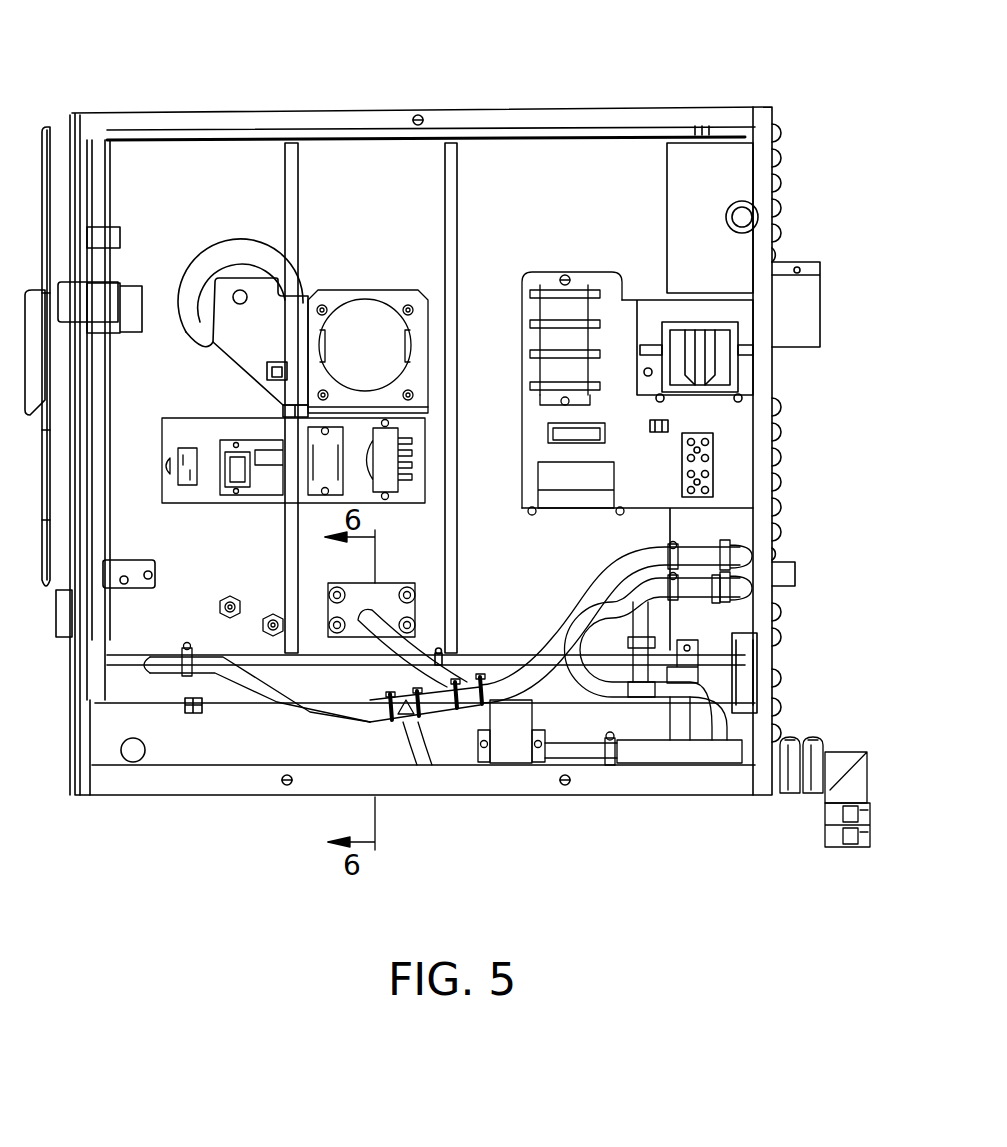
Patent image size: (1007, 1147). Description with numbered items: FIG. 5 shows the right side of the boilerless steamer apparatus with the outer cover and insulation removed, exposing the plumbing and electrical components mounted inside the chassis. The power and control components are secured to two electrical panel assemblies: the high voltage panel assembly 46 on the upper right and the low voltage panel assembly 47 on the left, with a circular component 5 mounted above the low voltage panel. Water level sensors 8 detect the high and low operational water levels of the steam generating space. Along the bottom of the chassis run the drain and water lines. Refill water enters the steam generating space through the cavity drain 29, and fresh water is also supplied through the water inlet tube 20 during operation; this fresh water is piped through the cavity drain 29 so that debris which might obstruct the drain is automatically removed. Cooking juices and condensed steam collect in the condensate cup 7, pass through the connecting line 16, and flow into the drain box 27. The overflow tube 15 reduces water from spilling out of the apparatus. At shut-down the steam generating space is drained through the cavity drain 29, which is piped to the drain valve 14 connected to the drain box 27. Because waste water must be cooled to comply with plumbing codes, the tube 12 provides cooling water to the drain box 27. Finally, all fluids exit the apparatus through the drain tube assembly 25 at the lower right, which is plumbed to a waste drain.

The circular component (fan/blower) 5 is at (363, 323).
The condensate cup 7 is at (353, 620).
The water level sensors 8 is at (262, 628).
The tube 12 is at (707, 592).
The drain valve 14 is at (512, 743).
The overflow tube 15 is at (645, 657).
The connecting line 16 is at (437, 672).
The water inlet tube 20 is at (708, 557).
The drain tube assembly 25 is at (858, 775).
The drain box 27 is at (713, 752).
The cavity drain 29 is at (153, 662).
The high voltage panel assembly 46 is at (619, 290).
The low voltage panel assembly 47 is at (185, 433).